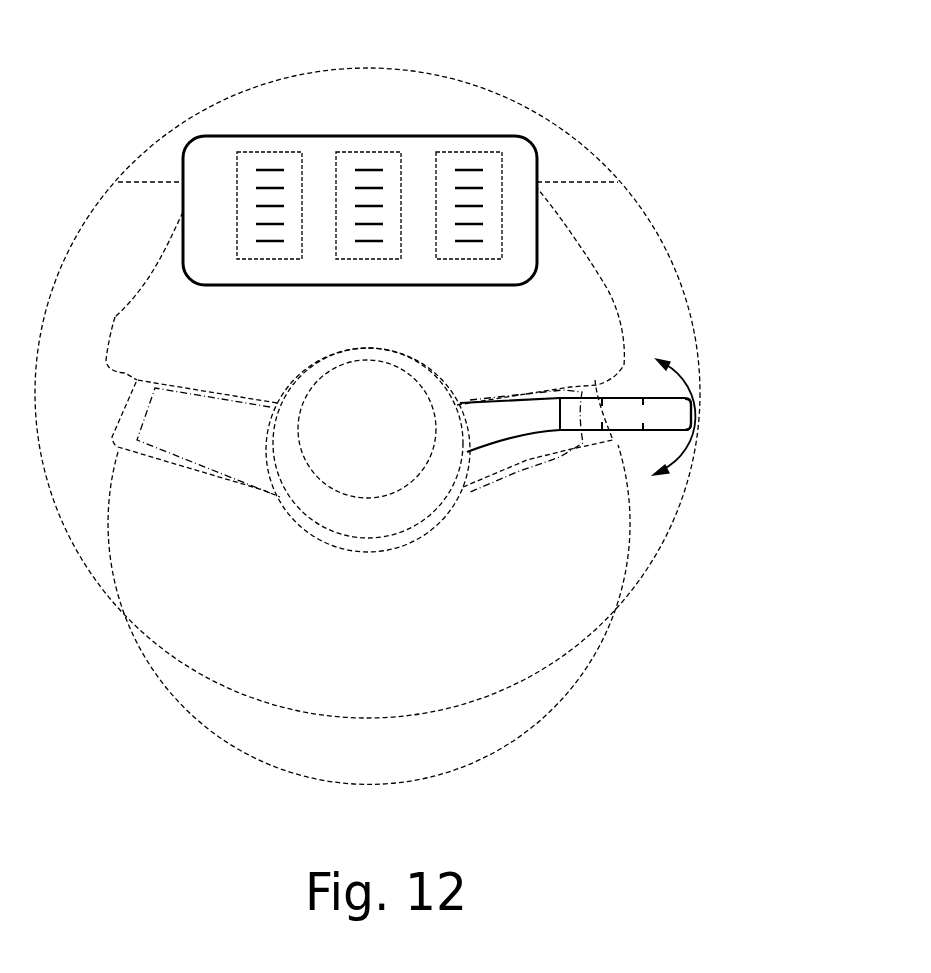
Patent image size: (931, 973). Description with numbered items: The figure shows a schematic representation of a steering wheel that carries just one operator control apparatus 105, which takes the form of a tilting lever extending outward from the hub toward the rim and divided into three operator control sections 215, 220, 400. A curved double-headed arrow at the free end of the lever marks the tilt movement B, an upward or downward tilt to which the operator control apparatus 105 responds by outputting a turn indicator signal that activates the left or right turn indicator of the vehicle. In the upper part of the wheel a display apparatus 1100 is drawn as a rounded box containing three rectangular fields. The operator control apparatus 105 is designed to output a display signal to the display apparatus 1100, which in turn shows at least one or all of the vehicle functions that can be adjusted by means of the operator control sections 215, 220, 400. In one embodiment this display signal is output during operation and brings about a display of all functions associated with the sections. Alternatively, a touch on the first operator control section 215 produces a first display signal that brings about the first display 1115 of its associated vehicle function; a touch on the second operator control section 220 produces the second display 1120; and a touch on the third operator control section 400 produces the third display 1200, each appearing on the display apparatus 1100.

The operator control apparatus 105 is at (657, 342).
The display apparatus 1100 is at (464, 148).
The first display 1115 is at (270, 152).
The second display 1120 is at (368, 152).
The third display 1200 is at (487, 152).
The first operator control section 215 is at (570, 430).
The second operator control section 220 is at (628, 418).
The third operator control section 400 is at (670, 418).
The tilt movement B is at (693, 417).